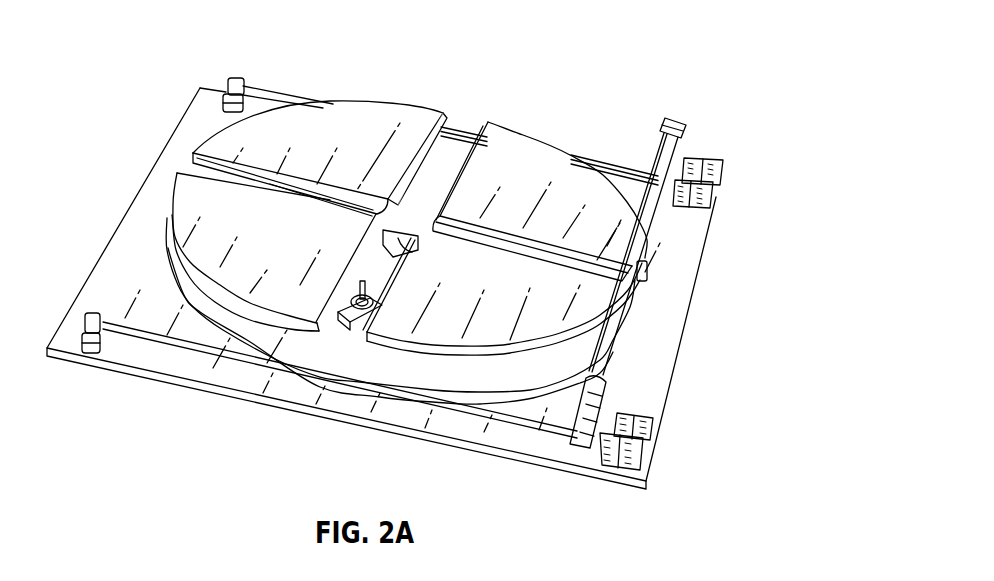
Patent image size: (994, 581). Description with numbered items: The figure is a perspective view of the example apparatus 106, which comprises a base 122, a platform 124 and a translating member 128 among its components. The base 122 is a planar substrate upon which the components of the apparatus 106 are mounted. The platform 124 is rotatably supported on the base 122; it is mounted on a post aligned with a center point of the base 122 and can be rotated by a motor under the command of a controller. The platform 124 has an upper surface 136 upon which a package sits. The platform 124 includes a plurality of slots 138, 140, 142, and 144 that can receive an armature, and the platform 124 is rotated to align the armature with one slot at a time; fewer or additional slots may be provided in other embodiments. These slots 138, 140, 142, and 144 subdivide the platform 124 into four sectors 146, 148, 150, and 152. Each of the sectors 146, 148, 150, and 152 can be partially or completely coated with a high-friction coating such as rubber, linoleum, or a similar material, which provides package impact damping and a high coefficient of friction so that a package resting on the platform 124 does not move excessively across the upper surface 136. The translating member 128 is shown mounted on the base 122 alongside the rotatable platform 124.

The apparatus 106 is at (702, 48).
The base 122 is at (680, 333).
The platform 124 is at (529, 103).
The translating member 128 is at (714, 142).
The upper surface 136 is at (298, 118).
The slot 138 is at (192, 203).
The slot 140 is at (459, 150).
The slot 142 is at (587, 258).
The slot 144 is at (348, 313).
The sector 146 is at (355, 143).
The sector 148 is at (533, 168).
The sector 150 is at (492, 285).
The sector 152 is at (305, 235).